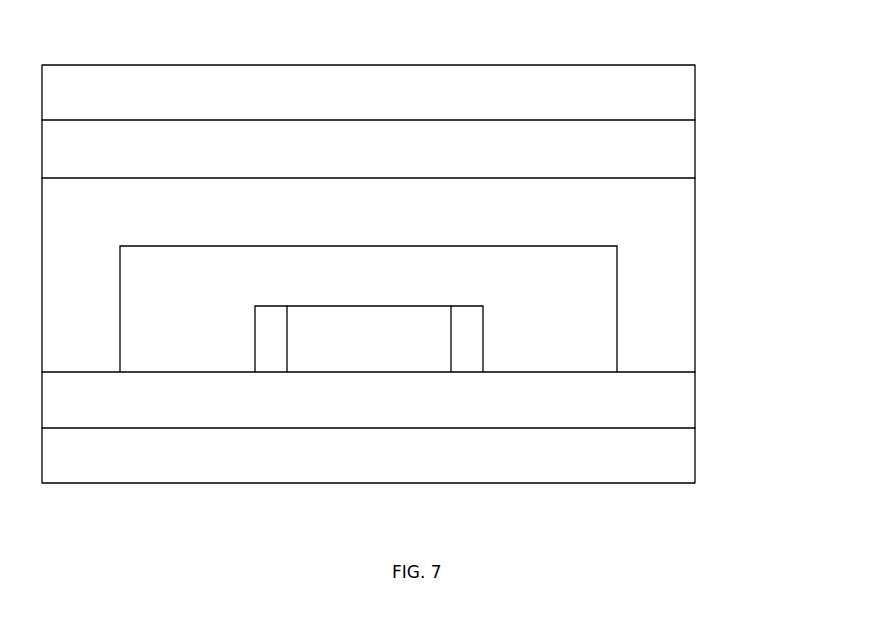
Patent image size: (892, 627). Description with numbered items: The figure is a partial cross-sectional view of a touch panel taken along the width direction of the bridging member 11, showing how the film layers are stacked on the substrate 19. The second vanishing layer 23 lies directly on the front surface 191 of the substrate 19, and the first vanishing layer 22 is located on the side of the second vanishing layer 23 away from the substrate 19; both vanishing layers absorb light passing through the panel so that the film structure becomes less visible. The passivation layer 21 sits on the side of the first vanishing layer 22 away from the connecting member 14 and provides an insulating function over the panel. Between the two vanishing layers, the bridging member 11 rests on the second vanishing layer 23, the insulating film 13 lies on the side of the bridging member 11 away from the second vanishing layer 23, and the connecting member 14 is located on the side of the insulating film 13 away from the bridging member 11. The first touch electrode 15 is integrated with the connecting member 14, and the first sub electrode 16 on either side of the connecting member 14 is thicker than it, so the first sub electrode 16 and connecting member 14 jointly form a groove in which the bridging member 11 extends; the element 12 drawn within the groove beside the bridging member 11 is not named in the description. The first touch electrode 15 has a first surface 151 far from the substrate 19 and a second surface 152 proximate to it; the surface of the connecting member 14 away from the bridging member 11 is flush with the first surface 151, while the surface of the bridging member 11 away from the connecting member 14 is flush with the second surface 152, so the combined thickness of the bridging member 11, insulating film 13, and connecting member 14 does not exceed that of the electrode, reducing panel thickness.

The bridging member 11 is at (465, 347).
The active layer 12 is at (342, 335).
The insulating film 13 is at (595, 273).
The connecting member 14 is at (380, 208).
The first touch electrode 15 is at (66, 195).
The first surface 151 is at (95, 177).
The second surface 152 is at (83, 372).
The first sub electrode 16 is at (640, 217).
The substrate 19 is at (656, 467).
The front surface 191 is at (557, 428).
The passivation layer 21 is at (640, 98).
The first vanishing layer 22 is at (640, 152).
The second vanishing layer 23 is at (653, 402).